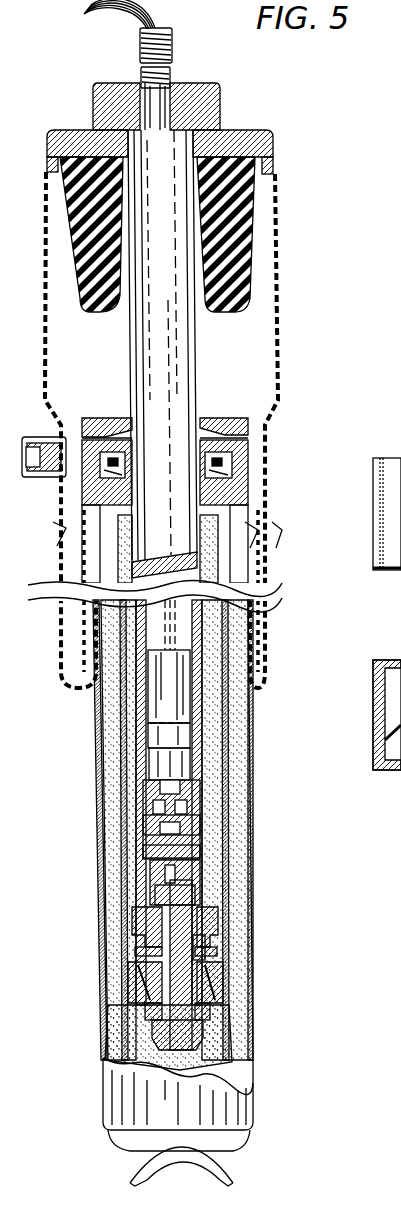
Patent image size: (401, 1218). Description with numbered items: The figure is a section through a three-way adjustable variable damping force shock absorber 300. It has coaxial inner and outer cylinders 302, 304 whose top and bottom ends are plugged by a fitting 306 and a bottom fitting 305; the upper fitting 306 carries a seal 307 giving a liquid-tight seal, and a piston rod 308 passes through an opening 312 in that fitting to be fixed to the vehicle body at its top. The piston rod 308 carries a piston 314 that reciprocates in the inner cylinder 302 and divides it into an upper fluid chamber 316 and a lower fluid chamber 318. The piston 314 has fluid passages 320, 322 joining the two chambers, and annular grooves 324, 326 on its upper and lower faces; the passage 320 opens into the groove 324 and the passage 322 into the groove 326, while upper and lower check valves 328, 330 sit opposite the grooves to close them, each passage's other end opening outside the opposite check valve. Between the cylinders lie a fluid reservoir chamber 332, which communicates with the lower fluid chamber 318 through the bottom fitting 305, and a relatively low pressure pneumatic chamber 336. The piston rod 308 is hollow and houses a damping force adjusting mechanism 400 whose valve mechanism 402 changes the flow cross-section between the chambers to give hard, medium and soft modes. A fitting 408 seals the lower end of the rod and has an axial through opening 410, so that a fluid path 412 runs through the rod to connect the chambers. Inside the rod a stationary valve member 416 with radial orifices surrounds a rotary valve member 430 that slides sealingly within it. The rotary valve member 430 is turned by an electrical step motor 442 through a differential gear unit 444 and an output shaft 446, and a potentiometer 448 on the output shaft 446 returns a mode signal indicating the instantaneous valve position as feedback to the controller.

The cylinder 300 is at (250, 734).
The inner cylinder 302 is at (250, 785).
The outer cylinder 304 is at (227, 827).
The bottom fitting 305 is at (125, 1133).
The fitting 306 is at (83, 460).
The seal 307 is at (248, 452).
The piston rod 308 is at (150, 350).
The seal ring 312 is at (126, 420).
The piston 314 is at (217, 965).
The upper fluid chamber 316 is at (213, 855).
The lower fluid chamber 318 is at (215, 1042).
The fluid passage 320 is at (212, 985).
The fluid passage 322 is at (145, 977).
The annular groove 324 is at (205, 958).
The annular groove 326 is at (203, 1012).
The upper check valve 328 is at (162, 957).
The lower check valve 330 is at (145, 1007).
The fluid reservoir chamber 332 is at (110, 1033).
The pneumatic chamber 336 is at (261, 340).
The damping force adjusting mechanism 400 is at (139, 825).
The valve mechanism 402 is at (149, 855).
The fitting 408 is at (143, 940).
The axial through opening 410 is at (163, 1030).
The fluid path 412 is at (178, 893).
The stationary valve member 416 is at (160, 868).
The rotary valve member 430 is at (163, 885).
The electrical step motor 442 is at (158, 703).
The differential gear unit 444 is at (160, 740).
The output shaft 446 is at (148, 800).
The potentiometer 448 is at (153, 760).